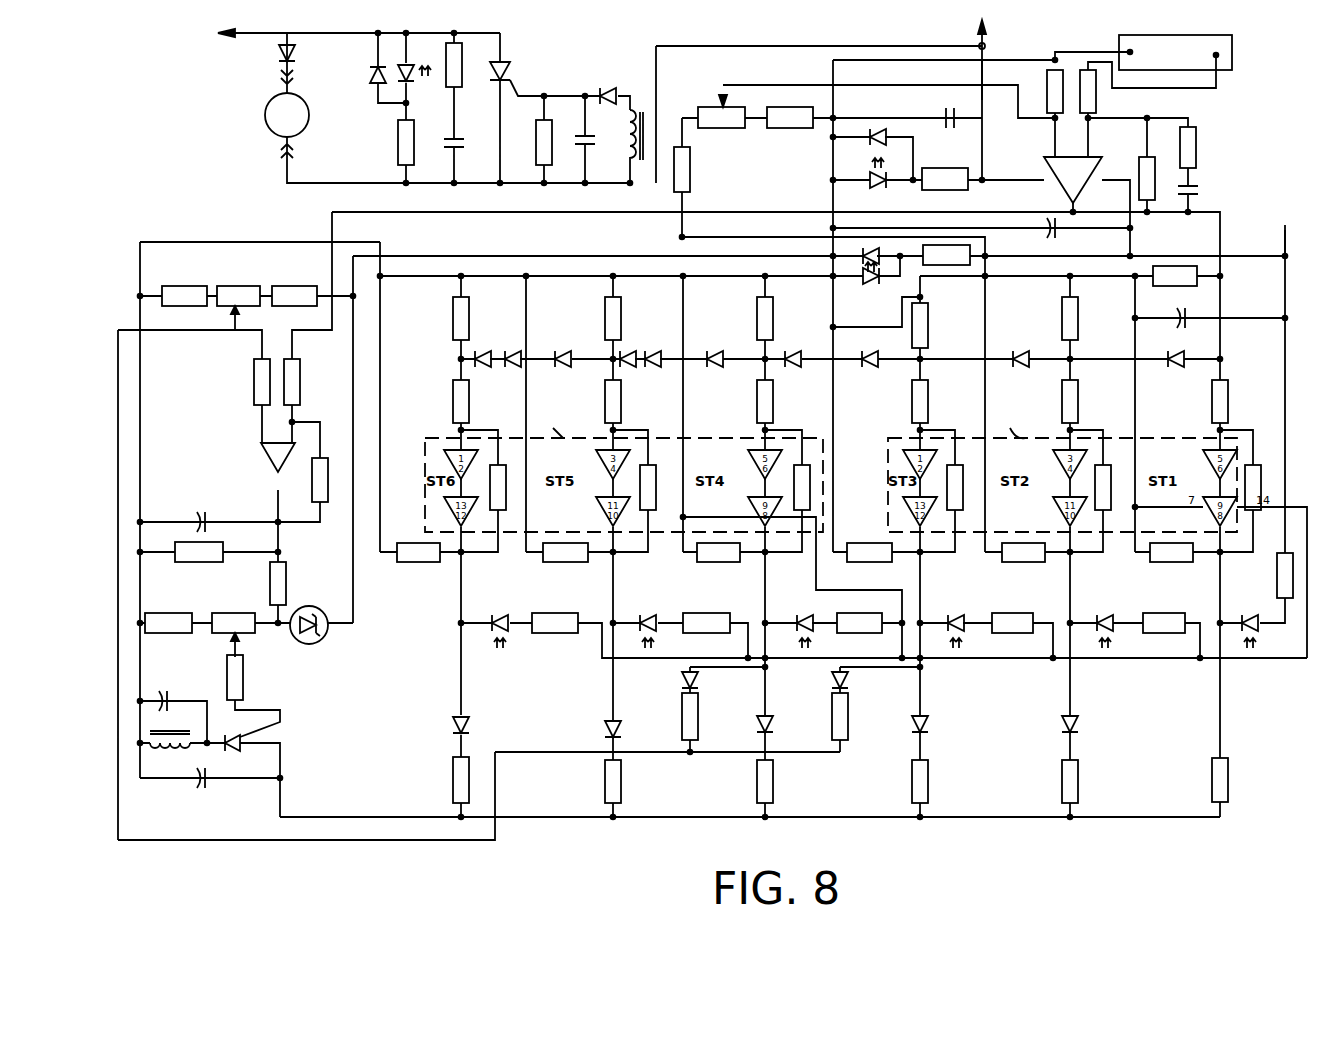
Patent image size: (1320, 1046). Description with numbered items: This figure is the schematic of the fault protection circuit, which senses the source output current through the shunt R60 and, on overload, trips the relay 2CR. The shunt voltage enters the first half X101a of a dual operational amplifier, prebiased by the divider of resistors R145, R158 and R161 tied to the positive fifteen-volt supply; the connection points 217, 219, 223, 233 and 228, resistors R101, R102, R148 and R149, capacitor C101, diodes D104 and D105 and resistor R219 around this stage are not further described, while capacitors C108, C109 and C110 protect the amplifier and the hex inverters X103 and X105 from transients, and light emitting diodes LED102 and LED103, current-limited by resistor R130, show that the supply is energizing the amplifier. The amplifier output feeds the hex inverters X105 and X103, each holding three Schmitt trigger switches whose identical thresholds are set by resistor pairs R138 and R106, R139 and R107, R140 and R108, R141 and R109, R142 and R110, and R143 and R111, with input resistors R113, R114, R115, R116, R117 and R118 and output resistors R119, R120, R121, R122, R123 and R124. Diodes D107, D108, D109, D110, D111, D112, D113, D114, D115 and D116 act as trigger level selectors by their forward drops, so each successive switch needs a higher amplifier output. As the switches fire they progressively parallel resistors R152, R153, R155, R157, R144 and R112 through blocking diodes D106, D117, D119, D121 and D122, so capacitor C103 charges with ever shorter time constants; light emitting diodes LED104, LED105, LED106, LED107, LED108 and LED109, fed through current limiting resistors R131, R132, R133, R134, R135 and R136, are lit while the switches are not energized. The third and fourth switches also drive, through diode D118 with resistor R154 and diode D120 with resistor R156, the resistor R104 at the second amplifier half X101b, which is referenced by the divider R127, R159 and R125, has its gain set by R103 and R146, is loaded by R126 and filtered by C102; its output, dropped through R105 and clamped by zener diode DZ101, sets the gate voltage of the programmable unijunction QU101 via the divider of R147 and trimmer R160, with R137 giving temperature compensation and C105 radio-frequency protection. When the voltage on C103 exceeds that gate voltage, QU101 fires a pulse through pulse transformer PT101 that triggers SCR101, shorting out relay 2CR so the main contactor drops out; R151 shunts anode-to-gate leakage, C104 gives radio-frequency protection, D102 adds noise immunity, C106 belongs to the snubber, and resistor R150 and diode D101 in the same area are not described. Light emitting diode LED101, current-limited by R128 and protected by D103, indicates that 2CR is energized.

The line terminal 217 is at (209, 39).
The shunt line 219 is at (1092, 43).
The shunt line 223 is at (1164, 91).
The -15V supply terminal 233 is at (978, 110).
The +15V supply terminal 228 is at (1290, 219).
The relay 2CR is at (287, 115).
The shunt R60 is at (1175, 52).
The diode D101 is at (261, 54).
The diode D102 is at (609, 86).
The diode D103 is at (358, 66).
The diode D104 is at (894, 133).
The diode D105 is at (862, 284).
The blocking diode D106 is at (1088, 726).
The trigger level selector diode D107 is at (1176, 354).
The trigger level selector diode D108 is at (1021, 354).
The trigger level selector diode D109 is at (871, 354).
The trigger level selector diode D110 is at (796, 354).
The trigger level selector diode D111 is at (716, 354).
The trigger level selector diode D112 is at (661, 354).
The trigger level selector diode D113 is at (638, 367).
The trigger level selector diode D114 is at (563, 354).
The trigger level selector diode D115 is at (513, 354).
The trigger level selector diode D116 is at (486, 367).
The blocking diode D117 is at (938, 726).
The blocking diode D118 is at (858, 681).
The blocking diode D119 is at (783, 726).
The blocking diode D120 is at (708, 681).
The blocking diode D121 is at (631, 731).
The blocking diode D122 is at (479, 725).
The zener diode DZ101 is at (325, 634).
The light emitting diode LED101 is at (416, 59).
The light emitting diode LED102 is at (866, 179).
The light emitting diode LED103 is at (857, 256).
The light emitting diode LED104 is at (1243, 623).
The light emitting diode LED105 is at (1095, 624).
The light emitting diode LED106 is at (948, 624).
The light emitting diode LED107 is at (793, 624).
The light emitting diode LED108 is at (643, 624).
The light emitting diode LED109 is at (493, 624).
The SCR SCR101 is at (524, 65).
The pulse transformer PT101 is at (394, 437).
The programmable unijunction QU101 is at (278, 743).
The first half of operational amplifier X101a is at (1081, 172).
The second half of operational amplifier X101b is at (261, 464).
The hex inverter X103 is at (1009, 413).
The hex inverter X105 is at (551, 413).
The capacitor C101 is at (1197, 186).
The capacitor C102 is at (190, 515).
The capacitor C103 is at (198, 787).
The capacitor C104 is at (598, 150).
The capacitor C105 is at (163, 694).
The capacitor C106 is at (462, 139).
The capacitor C108 is at (944, 133).
The capacitor C109 is at (1048, 235).
The capacitor C110 is at (1210, 305).
The resistor R101 is at (1088, 91).
The resistor R102 is at (1055, 91).
The resistor R103 is at (292, 382).
The resistor R104 is at (262, 382).
The resistor R105 is at (278, 583).
The input resistor R106 is at (1220, 401).
The input resistor R107 is at (1070, 401).
The input resistor R108 is at (920, 401).
The input resistor R109 is at (765, 401).
The input resistor R110 is at (613, 401).
The input resistor R111 is at (461, 401).
The resistor R112 is at (461, 780).
The resistor R113 is at (1175, 276).
The resistor R114 is at (1070, 318).
The resistor R115 is at (920, 325).
The resistor R116 is at (765, 318).
The resistor R117 is at (613, 318).
The resistor R118 is at (461, 318).
The resistor R119 is at (1171, 552).
The resistor R120 is at (1023, 552).
The resistor R121 is at (869, 552).
The resistor R122 is at (718, 552).
The resistor R123 is at (565, 552).
The resistor R124 is at (418, 552).
The resistor R125 is at (294, 296).
The loading resistor R126 is at (199, 552).
The resistor R127 is at (184, 296).
The resistor R128 is at (406, 142).
The resistor R130 is at (946, 255).
The current limiting resistor R131 is at (1285, 575).
The current limiting resistor R132 is at (1164, 623).
The current limiting resistor R133 is at (1012, 623).
The current limiting resistor R134 is at (859, 623).
The current limiting resistor R135 is at (706, 623).
The current limiting resistor R136 is at (555, 623).
The resistor R137 is at (235, 677).
The switch point setting resistor R138 is at (1253, 487).
The switch point setting resistor R139 is at (1103, 487).
The switch point setting resistor R140 is at (955, 487).
The switch point setting resistor R141 is at (802, 487).
The switch point setting resistor R142 is at (648, 487).
The switch point setting resistor R143 is at (498, 487).
The resistor R144 is at (613, 781).
The resistor R145 is at (682, 169).
The resistor R146 is at (320, 480).
The resistor R147 is at (168, 623).
The resistor R148 is at (1188, 147).
The resistor R149 is at (1147, 178).
The resistor R150 is at (454, 65).
The resistor R151 is at (544, 142).
The resistor R152 is at (1220, 780).
The resistor R153 is at (1070, 781).
The resistor R154 is at (840, 716).
The resistor R155 is at (920, 781).
The resistor R156 is at (690, 716).
The resistor R157 is at (765, 781).
The resistor R158 is at (721, 117).
The resistor R159 is at (238, 296).
The trimmer R160 is at (233, 623).
The resistor R161 is at (790, 117).
The resistor R219 is at (945, 179).